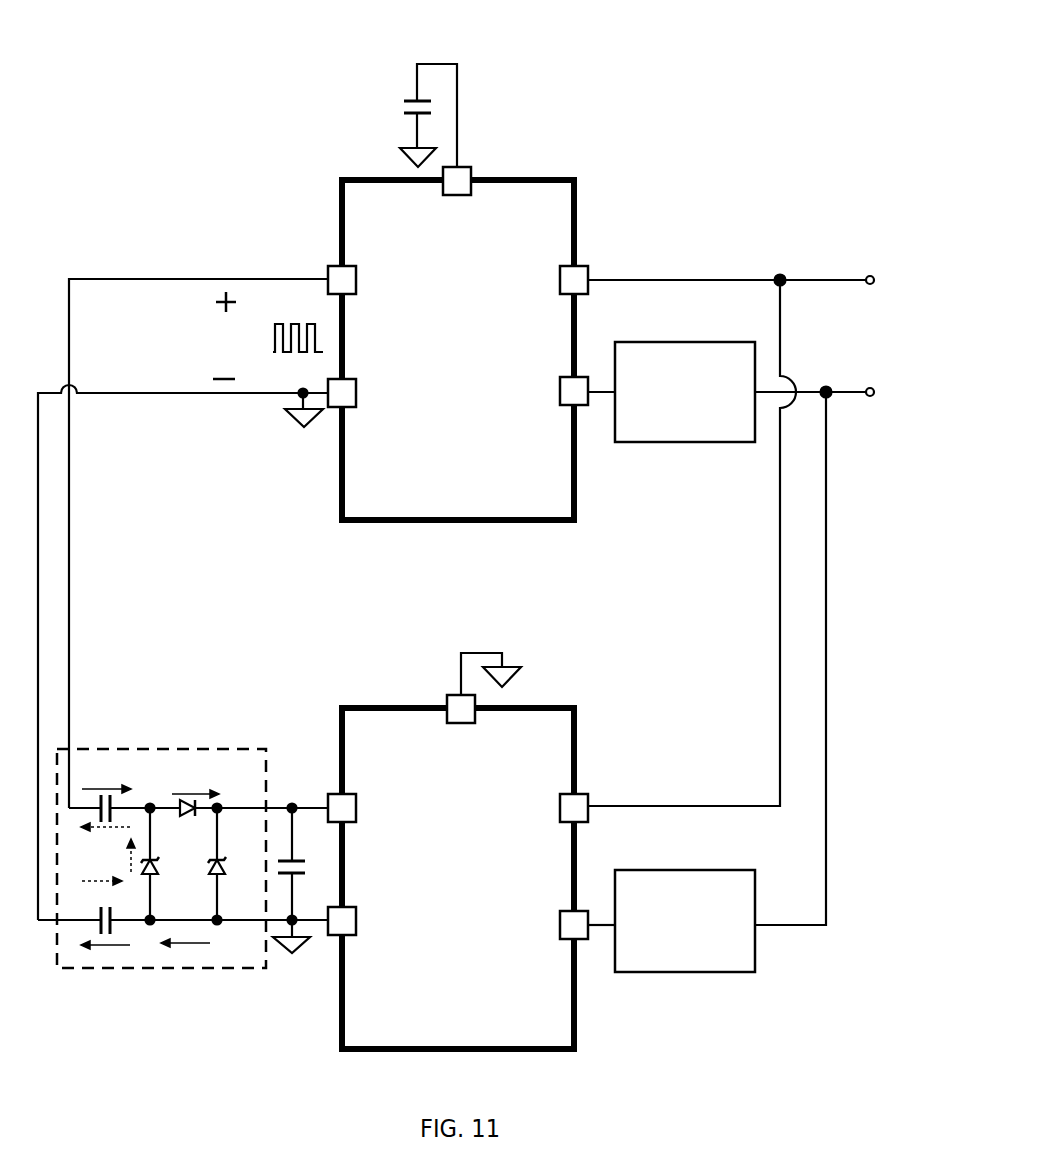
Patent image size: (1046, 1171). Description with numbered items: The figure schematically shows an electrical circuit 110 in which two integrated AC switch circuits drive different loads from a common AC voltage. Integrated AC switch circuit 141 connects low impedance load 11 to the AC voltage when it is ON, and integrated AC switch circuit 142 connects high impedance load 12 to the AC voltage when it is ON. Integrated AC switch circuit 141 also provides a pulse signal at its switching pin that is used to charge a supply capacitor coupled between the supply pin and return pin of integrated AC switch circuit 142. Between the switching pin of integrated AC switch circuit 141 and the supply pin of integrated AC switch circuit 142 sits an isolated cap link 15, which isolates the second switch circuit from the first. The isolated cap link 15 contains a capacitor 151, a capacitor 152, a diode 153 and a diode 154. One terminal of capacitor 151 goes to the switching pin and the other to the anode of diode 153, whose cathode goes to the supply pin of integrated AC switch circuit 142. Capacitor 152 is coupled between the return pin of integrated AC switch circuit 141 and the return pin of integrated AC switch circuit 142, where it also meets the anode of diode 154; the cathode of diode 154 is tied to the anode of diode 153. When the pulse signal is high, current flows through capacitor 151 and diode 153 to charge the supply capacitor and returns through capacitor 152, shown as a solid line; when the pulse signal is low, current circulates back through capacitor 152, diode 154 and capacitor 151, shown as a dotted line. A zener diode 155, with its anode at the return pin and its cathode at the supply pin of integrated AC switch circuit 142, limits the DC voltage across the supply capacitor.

The electrical circuit 110 is at (768, 47).
The integrated AC switch circuit 141 is at (475, 361).
The integrated AC switch circuit 142 is at (475, 889).
The low impedance load 11 is at (726, 429).
The high impedance load 12 is at (726, 959).
The isolated cap link 15 is at (173, 749).
The capacitor 151 is at (104, 790).
The capacitor 152 is at (104, 910).
The diode 153 is at (187, 820).
The diode 154 is at (169, 864).
The zener diode 155 is at (235, 864).